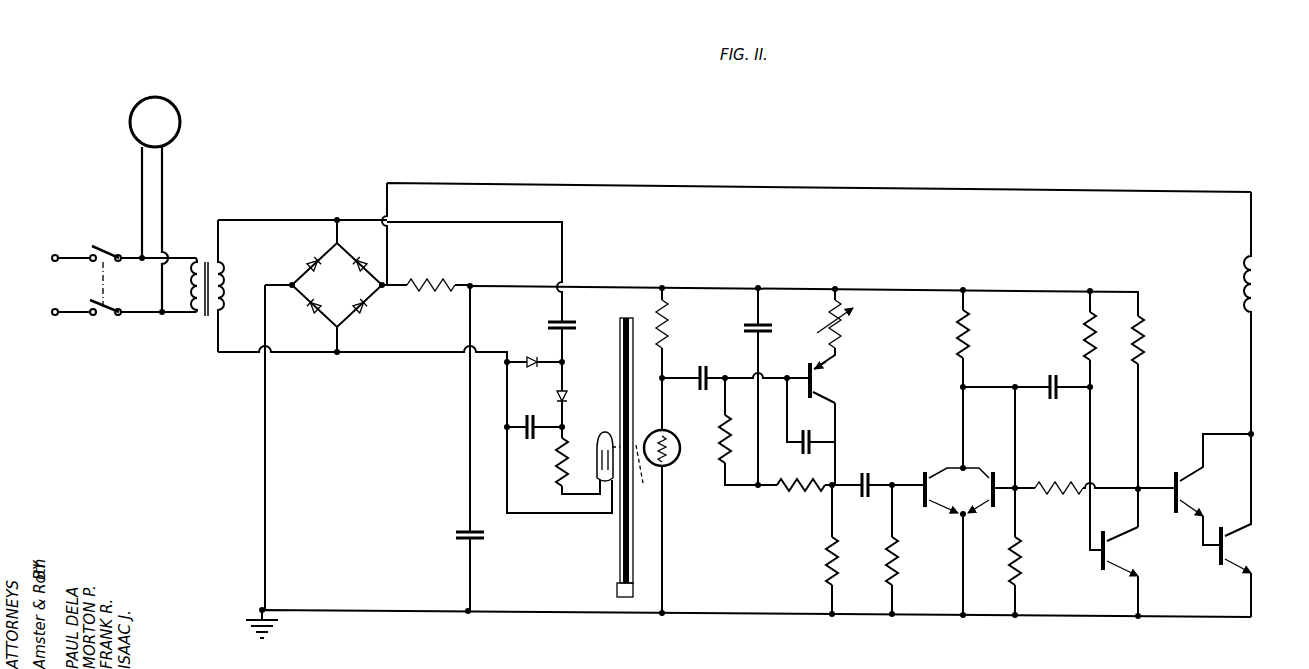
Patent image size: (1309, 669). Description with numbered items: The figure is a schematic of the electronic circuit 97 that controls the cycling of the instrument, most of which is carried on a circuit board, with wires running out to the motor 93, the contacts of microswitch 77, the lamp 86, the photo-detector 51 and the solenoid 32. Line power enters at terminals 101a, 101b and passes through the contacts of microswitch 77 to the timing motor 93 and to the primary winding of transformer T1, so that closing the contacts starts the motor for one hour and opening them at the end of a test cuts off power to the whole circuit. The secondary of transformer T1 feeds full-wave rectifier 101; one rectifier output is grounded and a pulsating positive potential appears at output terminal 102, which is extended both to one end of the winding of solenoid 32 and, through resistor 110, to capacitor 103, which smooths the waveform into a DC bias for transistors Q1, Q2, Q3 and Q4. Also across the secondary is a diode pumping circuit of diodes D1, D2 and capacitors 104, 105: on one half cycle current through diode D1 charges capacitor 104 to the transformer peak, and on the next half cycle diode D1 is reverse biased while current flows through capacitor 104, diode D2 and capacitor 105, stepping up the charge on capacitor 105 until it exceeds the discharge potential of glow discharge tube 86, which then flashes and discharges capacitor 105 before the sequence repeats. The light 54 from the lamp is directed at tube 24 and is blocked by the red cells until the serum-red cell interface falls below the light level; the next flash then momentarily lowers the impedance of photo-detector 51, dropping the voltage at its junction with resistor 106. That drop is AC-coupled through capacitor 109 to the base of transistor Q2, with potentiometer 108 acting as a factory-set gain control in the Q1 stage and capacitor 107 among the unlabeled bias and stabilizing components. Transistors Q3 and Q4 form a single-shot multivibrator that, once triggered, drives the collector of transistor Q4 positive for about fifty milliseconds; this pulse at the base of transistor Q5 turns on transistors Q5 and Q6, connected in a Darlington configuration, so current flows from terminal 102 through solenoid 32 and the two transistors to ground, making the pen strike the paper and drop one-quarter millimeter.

The circuit 97 is at (1068, 155).
The timing motor 93 is at (170, 119).
The terminal 101a is at (55, 254).
The terminal 101b is at (55, 315).
The microswitch 77 is at (108, 290).
The transformer T1 is at (197, 318).
The full-wave rectifier 101 is at (306, 278).
The output terminal 102 is at (386, 290).
The resistor 110 is at (446, 281).
The capacitor 103 is at (458, 530).
The capacitor 104 is at (574, 320).
The diode D1 is at (536, 356).
The diode D2 is at (567, 391).
The capacitor 105 is at (535, 440).
The glow discharge tube 86 is at (600, 434).
The tube 24 is at (619, 545).
The light 54 is at (633, 474).
The photo-detector 51 is at (670, 464).
The resistor 106 is at (669, 329).
The capacitor 107 is at (712, 353).
The transistor Q1 is at (808, 362).
The potentiometer 108 is at (849, 332).
The capacitor 109 is at (880, 460).
The transistor Q2 is at (925, 470).
The transistor Q3 is at (996, 470).
The transistor Q4 is at (1101, 566).
The transistor Q5 is at (1175, 470).
The transistor Q6 is at (1218, 558).
The solenoid 32 is at (1260, 282).